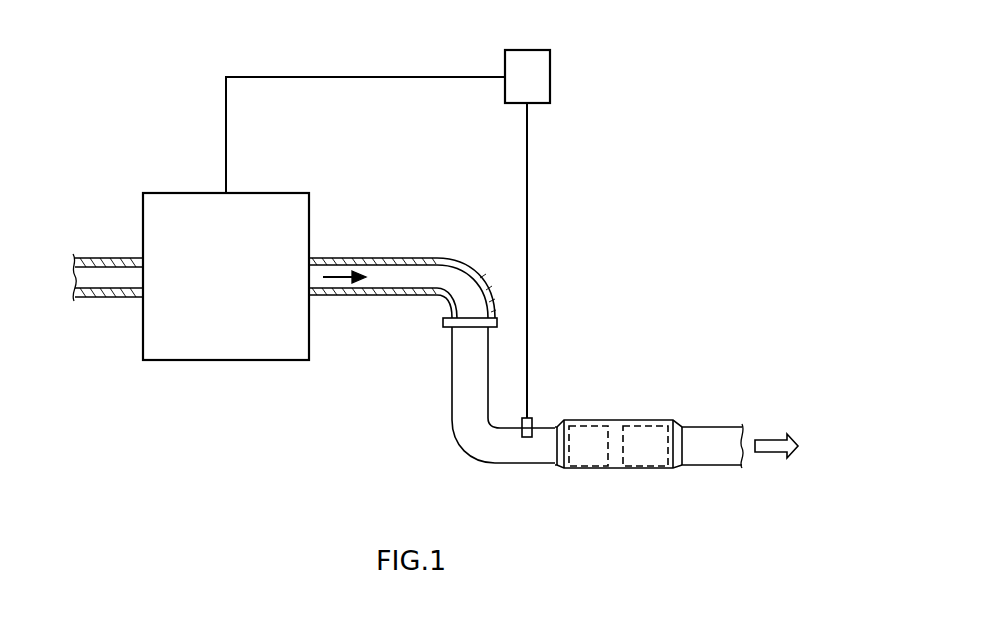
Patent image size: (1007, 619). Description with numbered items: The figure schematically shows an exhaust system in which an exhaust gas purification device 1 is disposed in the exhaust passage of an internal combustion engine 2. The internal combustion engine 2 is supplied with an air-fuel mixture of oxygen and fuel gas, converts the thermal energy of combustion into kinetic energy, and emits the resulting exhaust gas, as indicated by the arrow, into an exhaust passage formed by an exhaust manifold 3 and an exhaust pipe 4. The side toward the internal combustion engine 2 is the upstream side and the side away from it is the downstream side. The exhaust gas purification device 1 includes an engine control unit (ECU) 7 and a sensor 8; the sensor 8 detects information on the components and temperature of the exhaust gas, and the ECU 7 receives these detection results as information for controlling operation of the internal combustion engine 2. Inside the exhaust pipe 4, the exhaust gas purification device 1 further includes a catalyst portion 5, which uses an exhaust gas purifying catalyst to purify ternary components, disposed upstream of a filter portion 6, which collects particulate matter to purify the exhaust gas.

The exhaust gas purification device 1 is at (660, 82).
The internal combustion engine 2 is at (212, 362).
The exhaust manifold 3 is at (406, 258).
The exhaust pipe 4 is at (451, 372).
The catalyst portion 5 is at (588, 420).
The filter portion 6 is at (640, 420).
The engine control unit (ECU) 7 is at (550, 67).
The sensor 8 is at (527, 437).